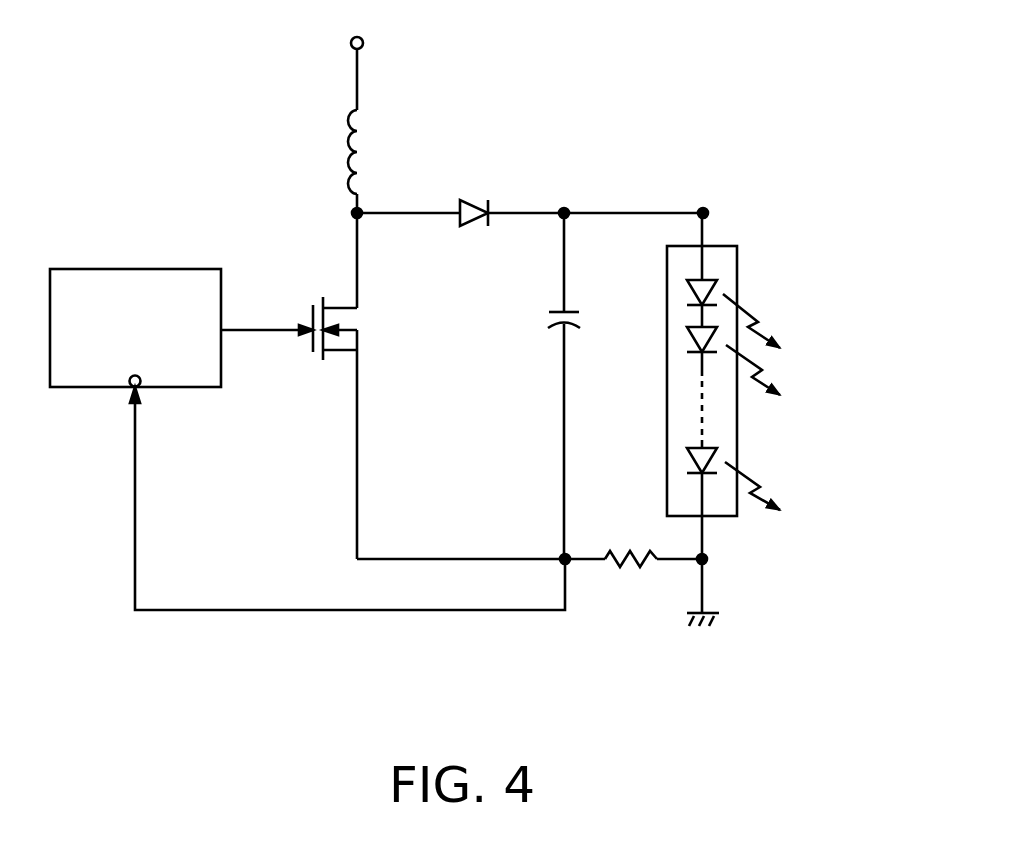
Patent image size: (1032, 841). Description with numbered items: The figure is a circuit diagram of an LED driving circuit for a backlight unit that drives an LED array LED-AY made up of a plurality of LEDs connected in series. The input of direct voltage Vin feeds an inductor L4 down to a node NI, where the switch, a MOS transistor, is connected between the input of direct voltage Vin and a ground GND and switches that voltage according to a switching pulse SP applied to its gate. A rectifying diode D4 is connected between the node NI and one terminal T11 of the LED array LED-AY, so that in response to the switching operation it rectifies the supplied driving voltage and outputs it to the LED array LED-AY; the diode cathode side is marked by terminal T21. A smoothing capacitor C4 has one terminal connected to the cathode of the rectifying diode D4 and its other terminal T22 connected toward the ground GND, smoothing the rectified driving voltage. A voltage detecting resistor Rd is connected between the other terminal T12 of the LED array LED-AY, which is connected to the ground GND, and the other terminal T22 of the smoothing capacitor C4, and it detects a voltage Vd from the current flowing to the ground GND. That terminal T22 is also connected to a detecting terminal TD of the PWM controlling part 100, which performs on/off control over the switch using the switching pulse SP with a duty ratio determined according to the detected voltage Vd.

The PWM controlling part 100 is at (116, 268).
The direct voltage Vin is at (358, 55).
The inductor L4 is at (330, 152).
The node NI is at (352, 213).
The rectifying diode D4 is at (472, 194).
The first output terminal T21 is at (565, 208).
The one terminal of the LED array T11 is at (705, 208).
The smoothing capacitor C4 is at (588, 386).
The switching pulse SP is at (267, 314).
The detected voltage Vd is at (481, 531).
The voltage detecting resistor Rd is at (630, 540).
The other terminal of the smoothing capacitor T22 is at (570, 562).
The other terminal of the LED array T12 is at (706, 561).
The ground GND is at (702, 612).
The detecting terminal TD is at (124, 388).
The LED array LED-AY is at (737, 270).